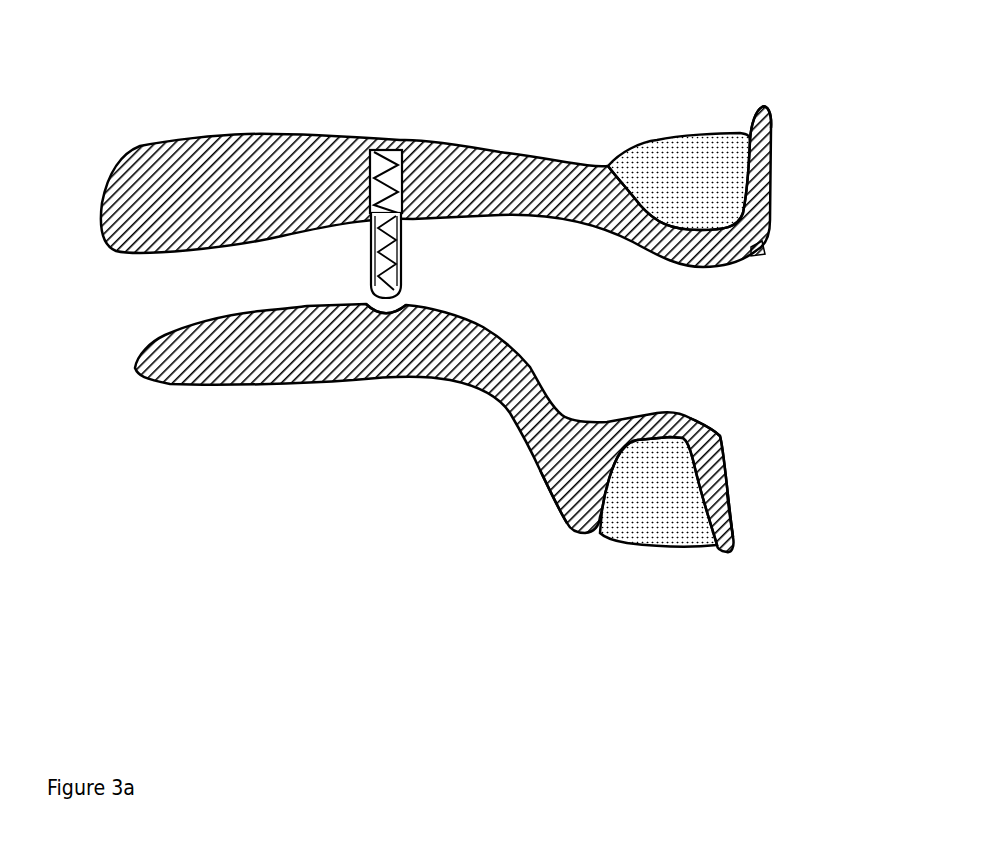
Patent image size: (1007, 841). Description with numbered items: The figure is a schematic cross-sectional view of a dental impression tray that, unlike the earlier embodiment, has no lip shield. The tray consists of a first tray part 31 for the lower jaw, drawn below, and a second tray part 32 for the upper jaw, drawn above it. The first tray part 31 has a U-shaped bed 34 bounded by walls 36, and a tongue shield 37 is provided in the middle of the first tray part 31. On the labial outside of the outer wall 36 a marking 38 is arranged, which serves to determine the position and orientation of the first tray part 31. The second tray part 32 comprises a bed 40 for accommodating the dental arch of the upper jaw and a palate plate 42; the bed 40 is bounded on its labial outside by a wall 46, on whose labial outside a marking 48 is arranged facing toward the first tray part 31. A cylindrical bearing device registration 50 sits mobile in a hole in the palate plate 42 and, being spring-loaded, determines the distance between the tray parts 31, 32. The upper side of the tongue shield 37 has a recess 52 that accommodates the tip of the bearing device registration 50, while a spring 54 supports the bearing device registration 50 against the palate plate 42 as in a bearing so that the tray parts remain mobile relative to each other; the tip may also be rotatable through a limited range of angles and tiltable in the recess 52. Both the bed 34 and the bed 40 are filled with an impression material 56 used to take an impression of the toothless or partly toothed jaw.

The first tray part 31 is at (490, 475).
The second tray part 32 is at (475, 327).
The U-shaped bed 34 is at (665, 442).
The walls 36 is at (575, 519).
The tongue shield 37 is at (306, 320).
The marking 38 is at (714, 428).
The bed 40 is at (691, 226).
The palate plate 42 is at (264, 133).
The wall 46 is at (762, 138).
The marking 48 is at (762, 251).
The bearing device registration 50 is at (394, 294).
The recess 52 is at (380, 319).
The spring 54 is at (379, 160).
The impression material 56 is at (687, 165).